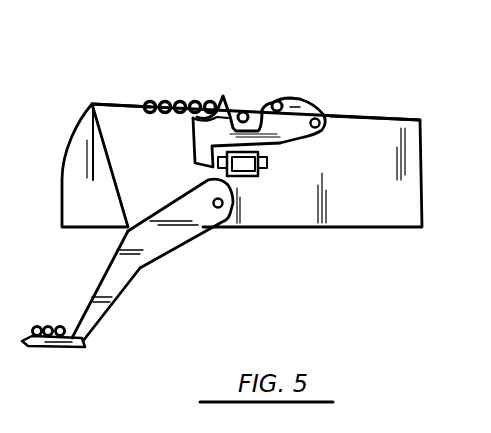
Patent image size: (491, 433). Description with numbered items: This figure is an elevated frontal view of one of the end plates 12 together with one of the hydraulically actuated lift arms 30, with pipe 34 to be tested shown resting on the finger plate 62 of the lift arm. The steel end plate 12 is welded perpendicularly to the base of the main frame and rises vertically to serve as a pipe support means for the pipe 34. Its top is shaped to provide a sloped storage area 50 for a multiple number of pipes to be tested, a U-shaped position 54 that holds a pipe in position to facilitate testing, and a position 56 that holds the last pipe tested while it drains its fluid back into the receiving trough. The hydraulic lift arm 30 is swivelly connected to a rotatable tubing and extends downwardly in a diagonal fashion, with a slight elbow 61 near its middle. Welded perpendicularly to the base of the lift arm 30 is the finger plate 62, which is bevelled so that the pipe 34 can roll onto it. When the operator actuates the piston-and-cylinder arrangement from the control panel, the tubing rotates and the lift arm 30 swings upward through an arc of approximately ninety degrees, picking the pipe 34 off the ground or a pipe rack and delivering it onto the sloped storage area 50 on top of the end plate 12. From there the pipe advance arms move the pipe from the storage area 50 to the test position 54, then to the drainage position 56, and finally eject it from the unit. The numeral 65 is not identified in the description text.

The end plate 12 is at (390, 137).
The hydraulic lift arm 30 is at (177, 232).
The pipe 34 is at (155, 98).
The storage area 50 is at (103, 105).
The U-shaped position 54 is at (262, 122).
The drain position 56 is at (287, 106).
The elbow 61 is at (137, 270).
The finger plate 62 is at (65, 348).
The top edge 65 is at (343, 115).